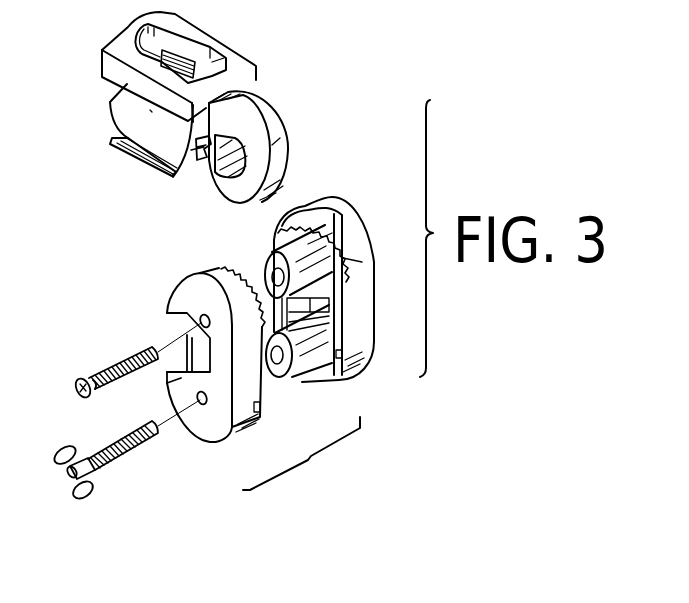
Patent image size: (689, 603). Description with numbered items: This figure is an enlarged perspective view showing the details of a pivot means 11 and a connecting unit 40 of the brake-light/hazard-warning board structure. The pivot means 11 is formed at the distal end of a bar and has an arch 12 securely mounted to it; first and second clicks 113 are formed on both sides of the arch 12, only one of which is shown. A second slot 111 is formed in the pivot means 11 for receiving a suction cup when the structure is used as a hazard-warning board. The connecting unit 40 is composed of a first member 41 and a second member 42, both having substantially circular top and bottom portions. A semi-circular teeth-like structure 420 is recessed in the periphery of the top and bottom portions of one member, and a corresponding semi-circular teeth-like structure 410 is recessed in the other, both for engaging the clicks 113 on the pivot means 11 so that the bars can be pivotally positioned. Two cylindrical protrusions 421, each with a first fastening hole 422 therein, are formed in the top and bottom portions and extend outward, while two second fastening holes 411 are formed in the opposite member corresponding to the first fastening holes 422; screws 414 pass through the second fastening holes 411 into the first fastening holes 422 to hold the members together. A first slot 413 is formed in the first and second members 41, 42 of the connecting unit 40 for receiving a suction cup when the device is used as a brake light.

The pivot means 11 is at (146, 168).
The second slot 111 is at (211, 62).
The arch 12 is at (284, 142).
The clicks 113 is at (201, 155).
The connecting unit 40 is at (301, 456).
The first member 41 is at (221, 447).
The semi-circular teeth-like structure 410 is at (226, 262).
The second fastening holes 411 is at (200, 321).
The first slot 413 is at (173, 355).
The screws 414 is at (102, 472).
The second member 42 is at (363, 362).
The semi-circular teeth-like structure 420 is at (322, 217).
The cylindrical protrusions 421 is at (284, 250).
The first fastening holes 422 is at (283, 370).